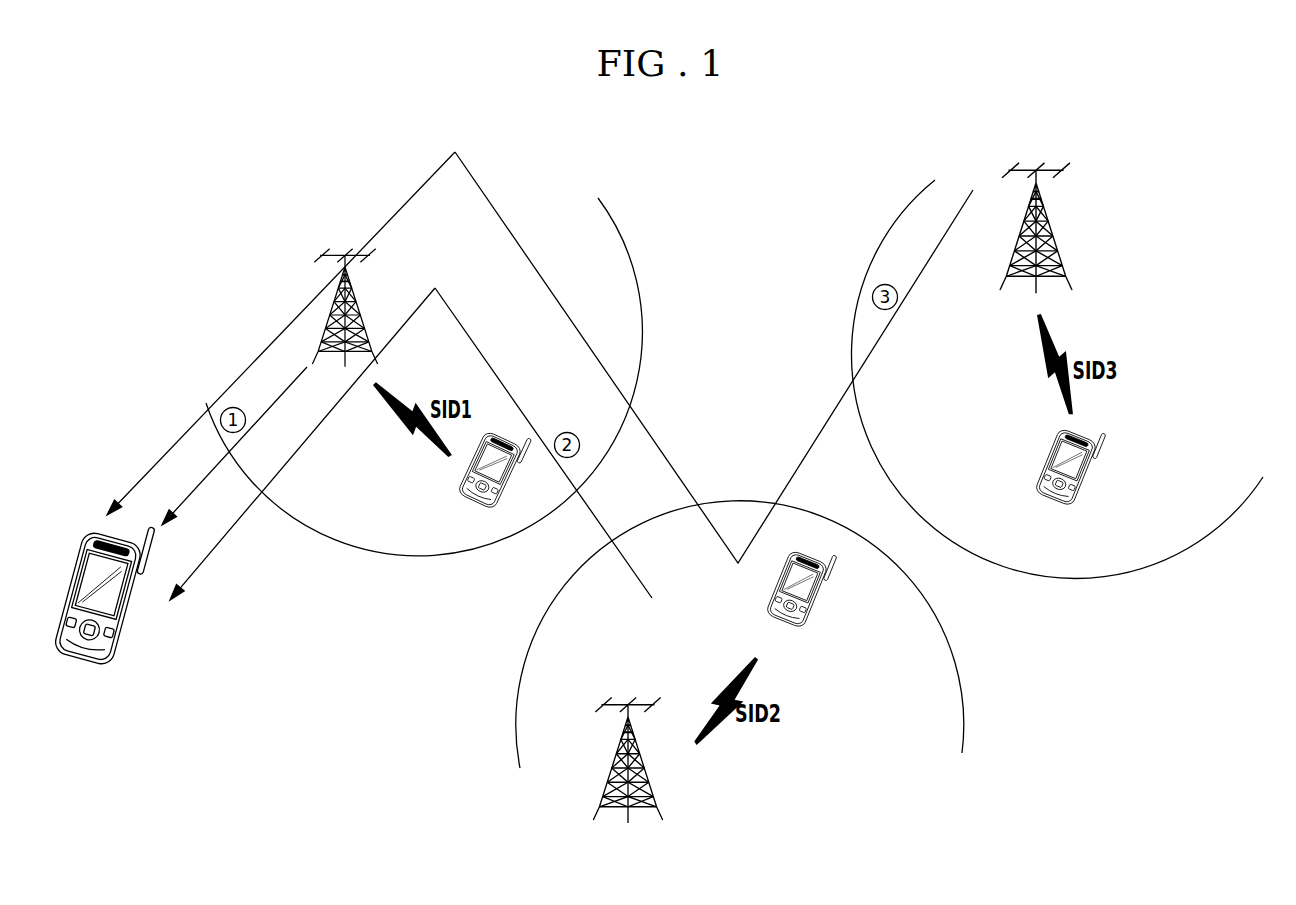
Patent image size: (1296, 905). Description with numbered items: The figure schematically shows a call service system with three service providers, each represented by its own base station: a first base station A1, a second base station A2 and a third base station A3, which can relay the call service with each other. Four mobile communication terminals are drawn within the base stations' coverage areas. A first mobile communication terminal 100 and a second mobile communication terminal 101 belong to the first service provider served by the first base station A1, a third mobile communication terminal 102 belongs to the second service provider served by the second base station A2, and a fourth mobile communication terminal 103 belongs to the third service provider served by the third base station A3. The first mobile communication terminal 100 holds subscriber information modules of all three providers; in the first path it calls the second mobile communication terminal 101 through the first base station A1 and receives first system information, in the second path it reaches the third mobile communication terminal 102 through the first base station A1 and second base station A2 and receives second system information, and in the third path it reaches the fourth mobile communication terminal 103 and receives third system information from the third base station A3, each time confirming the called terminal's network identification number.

The first mobile communication terminal 100 is at (85, 667).
The second mobile communication terminal 101 is at (467, 495).
The third mobile communication terminal 102 is at (810, 620).
The fourth mobile communication terminal 103 is at (1105, 433).
The first base station A1 is at (344, 290).
The second base station A2 is at (627, 775).
The third base station A3 is at (1036, 211).